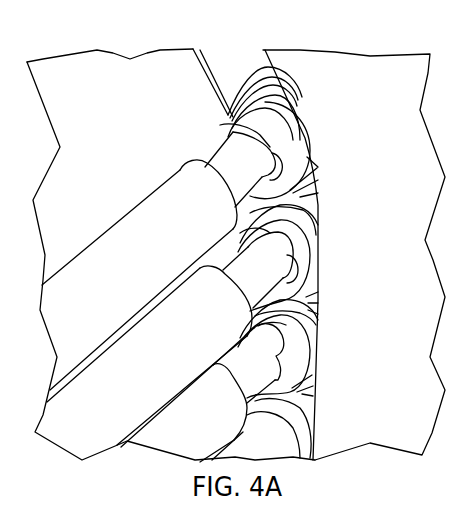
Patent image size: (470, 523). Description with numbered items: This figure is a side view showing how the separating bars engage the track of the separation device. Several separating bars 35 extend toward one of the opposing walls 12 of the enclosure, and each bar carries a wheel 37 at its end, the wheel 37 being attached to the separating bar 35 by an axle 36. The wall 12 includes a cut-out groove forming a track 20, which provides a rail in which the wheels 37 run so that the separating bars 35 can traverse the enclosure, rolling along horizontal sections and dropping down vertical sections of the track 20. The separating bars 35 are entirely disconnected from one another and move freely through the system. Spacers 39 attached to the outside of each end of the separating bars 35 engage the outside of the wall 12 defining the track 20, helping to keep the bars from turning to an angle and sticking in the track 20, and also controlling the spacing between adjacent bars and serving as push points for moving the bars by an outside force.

The wall 12 is at (377, 313).
The track 20 is at (245, 68).
The separating bar 35 is at (105, 270).
The axle 36 is at (232, 170).
The wheel 37 is at (292, 120).
The spacer 39 is at (268, 68).